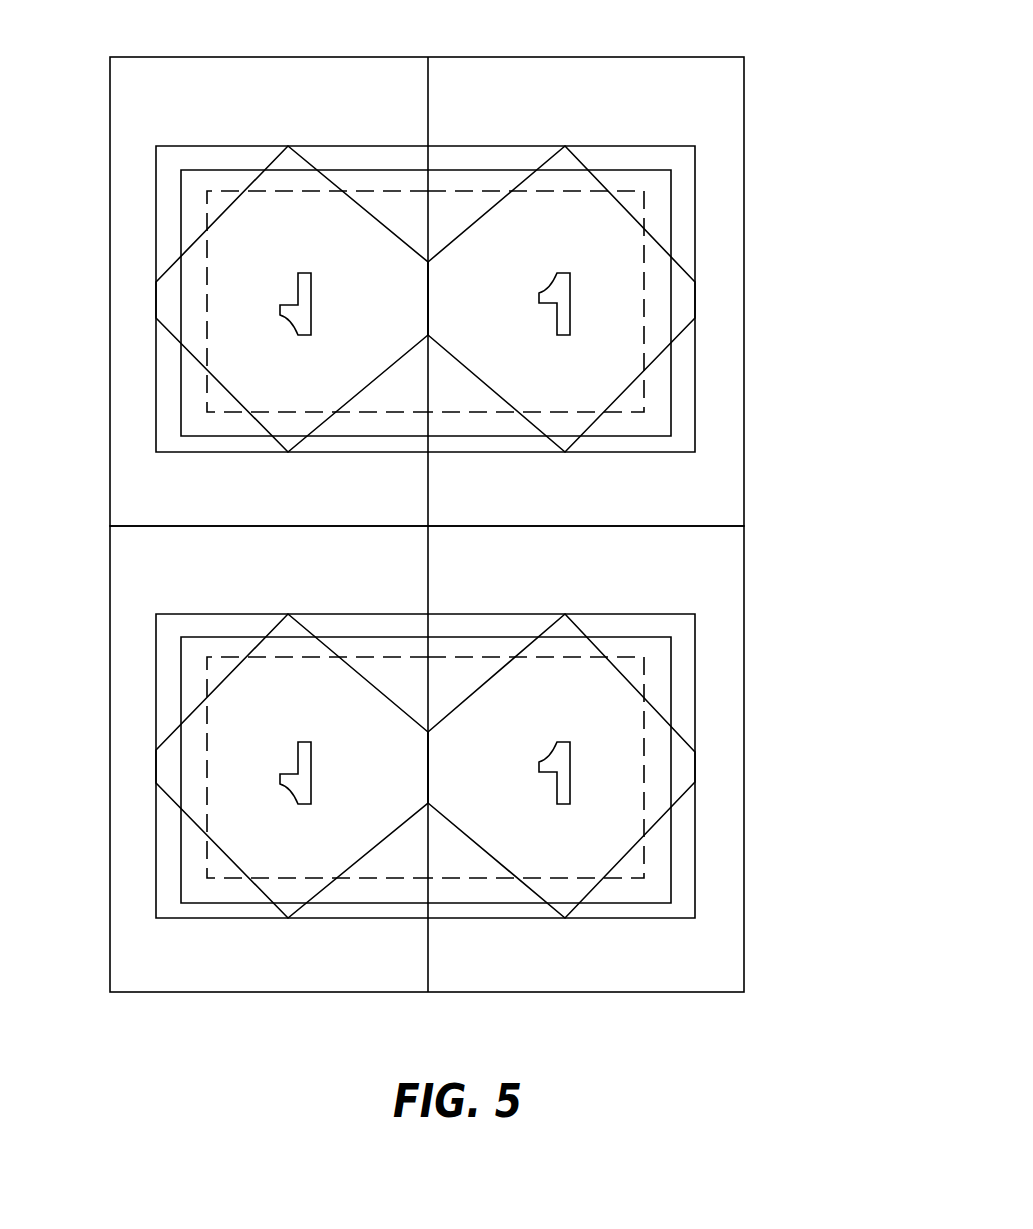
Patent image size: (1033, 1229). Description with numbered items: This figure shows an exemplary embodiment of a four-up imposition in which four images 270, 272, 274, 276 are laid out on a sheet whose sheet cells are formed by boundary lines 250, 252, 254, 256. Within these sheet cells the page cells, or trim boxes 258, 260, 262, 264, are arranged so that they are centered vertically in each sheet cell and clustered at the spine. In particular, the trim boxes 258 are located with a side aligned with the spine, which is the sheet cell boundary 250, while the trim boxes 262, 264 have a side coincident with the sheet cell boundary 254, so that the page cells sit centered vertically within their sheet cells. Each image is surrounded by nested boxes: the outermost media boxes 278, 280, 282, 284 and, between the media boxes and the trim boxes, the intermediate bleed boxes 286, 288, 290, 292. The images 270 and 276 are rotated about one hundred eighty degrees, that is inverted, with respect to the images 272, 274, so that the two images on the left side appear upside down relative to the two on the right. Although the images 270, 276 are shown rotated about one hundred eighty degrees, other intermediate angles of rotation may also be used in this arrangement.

The boundary line 250 is at (428, 92).
The boundary line 252 is at (717, 526).
The boundary line 254 is at (428, 973).
The boundary line 256 is at (133, 525).
The trim box 258 is at (207, 310).
The trim box 260 is at (644, 296).
The trim box 262 is at (644, 760).
The trim box 264 is at (207, 797).
The image 270 is at (292, 233).
The image 272 is at (569, 233).
The image 274 is at (619, 766).
The image 276 is at (260, 823).
The media box 278 is at (155, 373).
The media box 280 is at (695, 231).
The media box 282 is at (695, 912).
The media box 284 is at (156, 905).
The intermediate bleed box 286 is at (182, 182).
The intermediate bleed box 288 is at (672, 180).
The intermediate bleed box 290 is at (671, 855).
The intermediate bleed box 292 is at (181, 688).